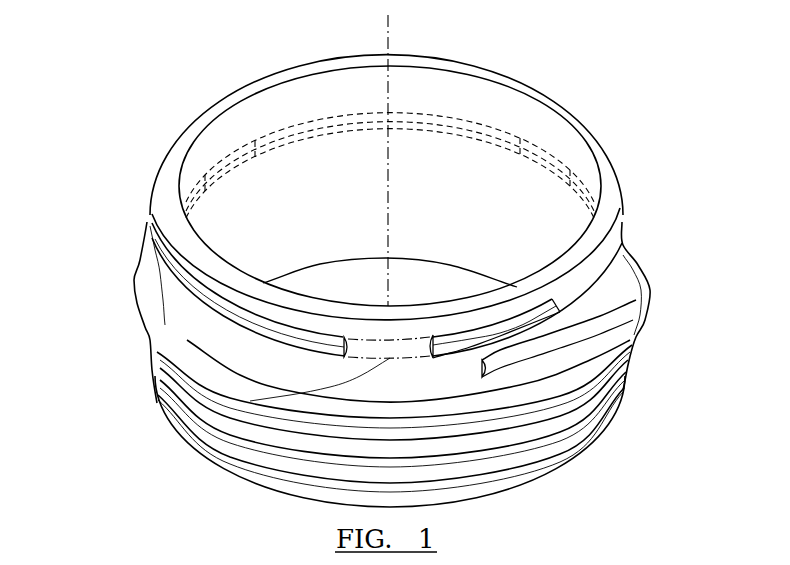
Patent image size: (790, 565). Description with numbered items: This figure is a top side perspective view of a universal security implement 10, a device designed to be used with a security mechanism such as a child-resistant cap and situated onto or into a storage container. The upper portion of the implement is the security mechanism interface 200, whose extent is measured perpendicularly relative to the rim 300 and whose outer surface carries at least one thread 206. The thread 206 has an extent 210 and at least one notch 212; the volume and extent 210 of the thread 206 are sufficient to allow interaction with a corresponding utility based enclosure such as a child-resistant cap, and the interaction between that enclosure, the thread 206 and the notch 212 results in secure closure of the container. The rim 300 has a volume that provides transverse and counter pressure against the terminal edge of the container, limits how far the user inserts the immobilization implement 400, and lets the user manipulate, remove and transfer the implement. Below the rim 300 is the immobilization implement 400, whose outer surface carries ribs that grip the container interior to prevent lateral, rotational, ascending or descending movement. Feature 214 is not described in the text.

The universal security implement 10 is at (104, 50).
The security mechanism interface 200 is at (608, 247).
The thread 206 is at (573, 332).
The extent 210 is at (158, 272).
The notch 212 is at (398, 403).
The internal groove 214 is at (548, 140).
The rim 300 is at (137, 303).
The immobilization implement 400 is at (583, 450).